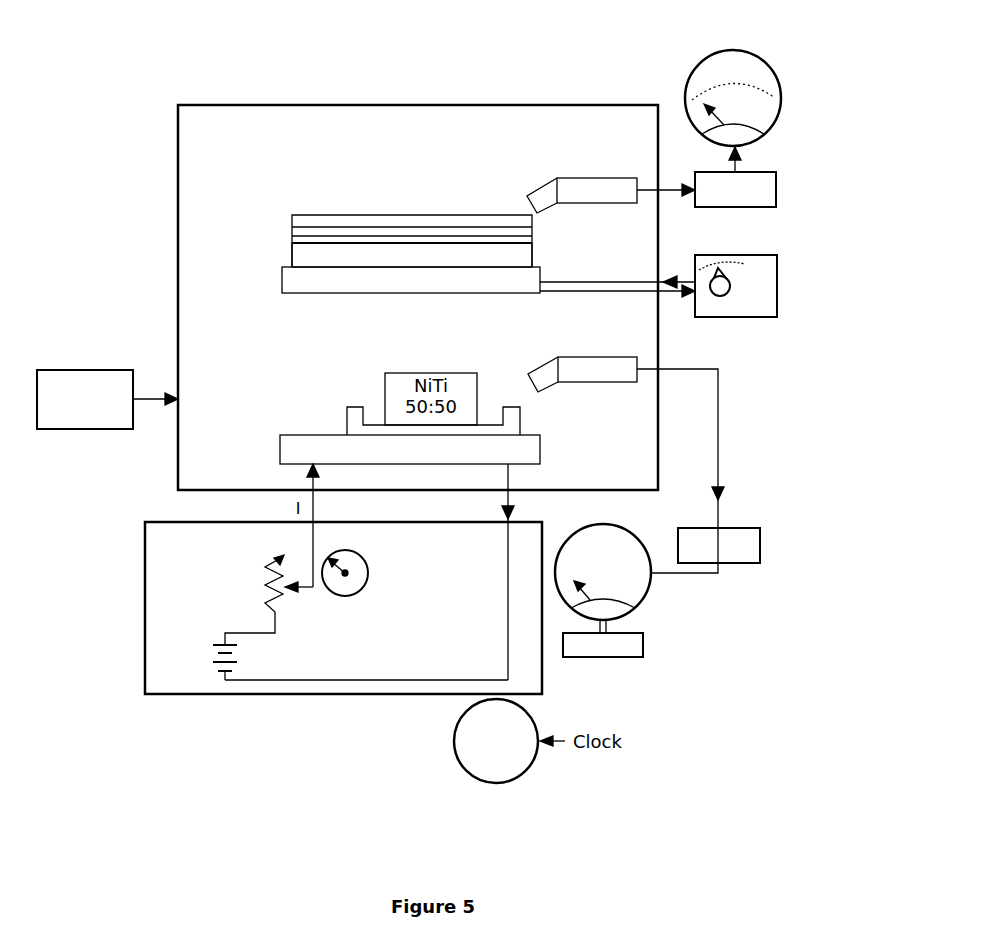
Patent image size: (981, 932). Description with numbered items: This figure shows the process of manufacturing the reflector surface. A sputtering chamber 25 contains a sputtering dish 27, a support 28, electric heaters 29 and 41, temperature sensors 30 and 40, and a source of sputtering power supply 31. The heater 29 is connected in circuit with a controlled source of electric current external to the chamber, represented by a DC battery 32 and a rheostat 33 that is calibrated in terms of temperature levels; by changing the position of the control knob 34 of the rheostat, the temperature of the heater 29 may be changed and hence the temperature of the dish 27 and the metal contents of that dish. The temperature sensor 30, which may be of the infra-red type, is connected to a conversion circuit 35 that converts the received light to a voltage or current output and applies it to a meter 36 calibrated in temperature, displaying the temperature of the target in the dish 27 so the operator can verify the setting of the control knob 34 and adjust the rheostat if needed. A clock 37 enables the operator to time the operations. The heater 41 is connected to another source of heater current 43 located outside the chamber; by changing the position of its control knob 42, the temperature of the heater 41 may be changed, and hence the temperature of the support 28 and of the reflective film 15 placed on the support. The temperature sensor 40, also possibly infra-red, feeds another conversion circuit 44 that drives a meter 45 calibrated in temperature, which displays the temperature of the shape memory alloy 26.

The reflective film 15 is at (533, 232).
The sputtering chamber 25 is at (177, 257).
The shape memory alloy 26 is at (292, 215).
The sputtering dish 27 is at (347, 407).
The support 28 is at (290, 252).
The electric heater 29 is at (280, 450).
The temperature sensor 30 is at (584, 355).
The sputtering power supply 31 is at (83, 368).
The DC battery 32 is at (222, 643).
The rheostat 33 is at (268, 566).
The control knob 34 is at (352, 597).
The conversion circuit 35 is at (743, 528).
The meter 36 is at (626, 527).
The clock 37 is at (454, 741).
The temperature sensor 40 is at (582, 172).
The electric heater 41 is at (281, 281).
The control knob 42 is at (735, 278).
The source of heater current 43 is at (740, 318).
The conversion circuit 44 is at (777, 190).
The meter 45 is at (755, 53).